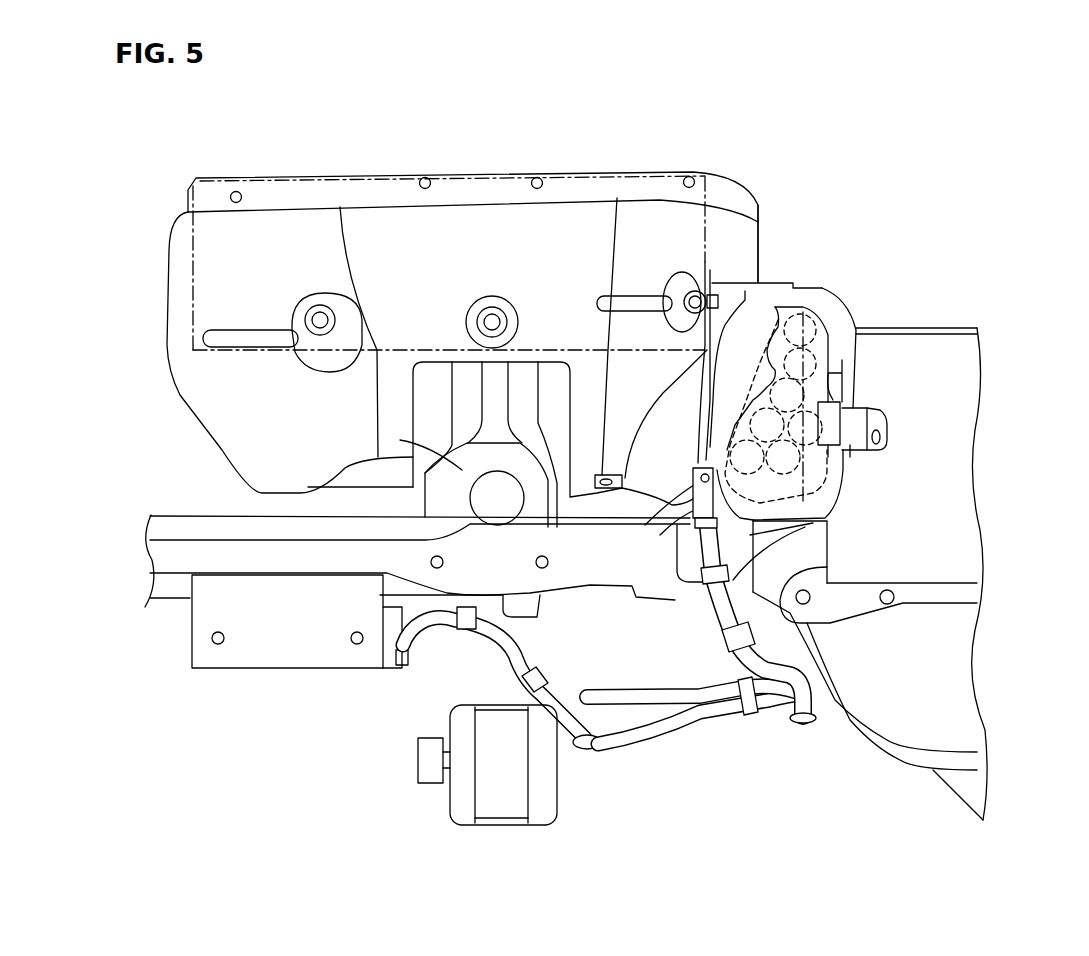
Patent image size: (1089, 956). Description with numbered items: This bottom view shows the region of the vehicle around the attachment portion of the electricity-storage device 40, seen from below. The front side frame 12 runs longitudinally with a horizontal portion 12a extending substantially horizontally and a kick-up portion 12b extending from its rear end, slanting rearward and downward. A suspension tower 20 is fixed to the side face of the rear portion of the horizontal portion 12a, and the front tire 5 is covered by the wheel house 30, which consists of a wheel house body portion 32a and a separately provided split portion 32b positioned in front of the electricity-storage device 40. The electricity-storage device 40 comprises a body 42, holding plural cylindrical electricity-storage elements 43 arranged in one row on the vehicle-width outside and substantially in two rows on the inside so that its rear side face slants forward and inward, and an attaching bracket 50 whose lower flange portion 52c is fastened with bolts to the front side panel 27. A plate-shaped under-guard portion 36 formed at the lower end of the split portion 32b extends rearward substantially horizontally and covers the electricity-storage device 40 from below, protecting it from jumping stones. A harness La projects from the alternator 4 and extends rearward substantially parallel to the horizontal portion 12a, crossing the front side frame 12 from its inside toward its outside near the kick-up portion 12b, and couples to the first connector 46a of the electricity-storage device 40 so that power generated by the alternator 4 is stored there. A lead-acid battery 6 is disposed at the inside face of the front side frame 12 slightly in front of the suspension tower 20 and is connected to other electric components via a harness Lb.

The front tire 5 is at (250, 180).
The wheel house 30 is at (838, 107).
The wheel house body portion 32a is at (722, 190).
The split portion 32b is at (768, 305).
The electricity-storage element 43 is at (838, 305).
The front side panel 27 is at (883, 343).
The body 42 is at (817, 388).
The lower flange portion 52c is at (880, 409).
The attaching bracket 50 is at (956, 403).
The electricity-storage device 40 is at (855, 461).
The under-guard portion 36 is at (850, 500).
The suspension tower 20 is at (462, 466).
The horizontal portion 12a is at (266, 548).
The front side frame 12 is at (419, 565).
The kick-up portion 12b is at (690, 570).
The lead-acid battery 6 is at (281, 655).
The harness Lb is at (497, 648).
The harness La is at (607, 700).
The first connector 46a is at (692, 503).
The alternator 4 is at (543, 795).